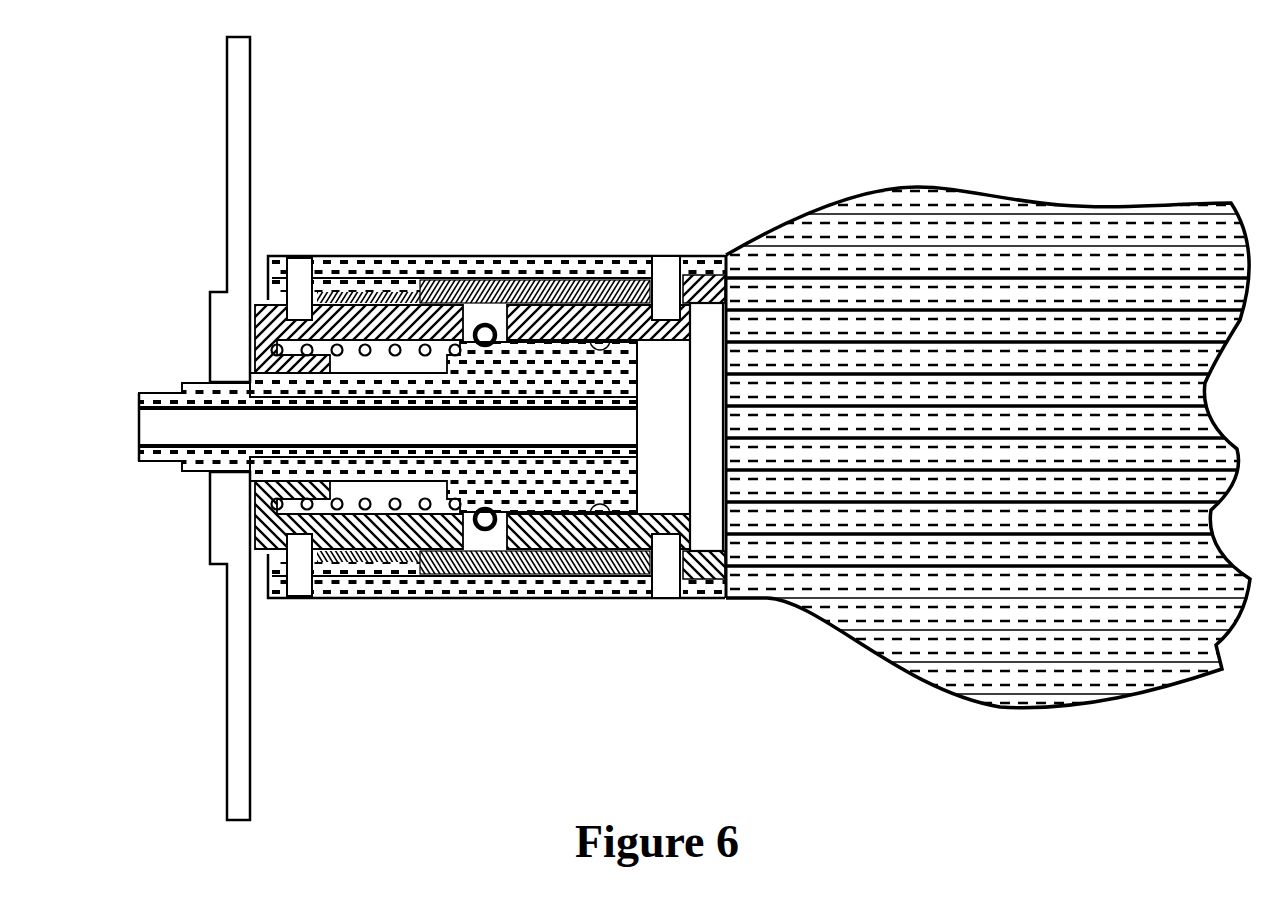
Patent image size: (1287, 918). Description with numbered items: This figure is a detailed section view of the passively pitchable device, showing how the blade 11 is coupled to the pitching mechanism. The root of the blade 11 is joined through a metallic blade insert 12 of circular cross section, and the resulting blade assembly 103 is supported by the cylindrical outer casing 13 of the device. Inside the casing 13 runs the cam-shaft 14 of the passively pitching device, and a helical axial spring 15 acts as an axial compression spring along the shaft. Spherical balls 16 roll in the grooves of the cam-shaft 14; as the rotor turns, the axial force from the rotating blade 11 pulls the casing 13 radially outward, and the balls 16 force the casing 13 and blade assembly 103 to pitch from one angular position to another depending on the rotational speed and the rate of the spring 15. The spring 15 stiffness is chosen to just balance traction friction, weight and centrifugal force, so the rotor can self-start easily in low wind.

The blade assembly 103 is at (820, 150).
The blade 11 is at (872, 607).
The metallic blade insert having circular cross section 12 is at (608, 573).
The outer casing of the passively pitchable device 13 is at (367, 565).
The cam-shaft of the passively pitching device 14 is at (543, 468).
The helical axial spring 15 is at (417, 358).
The spherical ball 16 is at (492, 322).